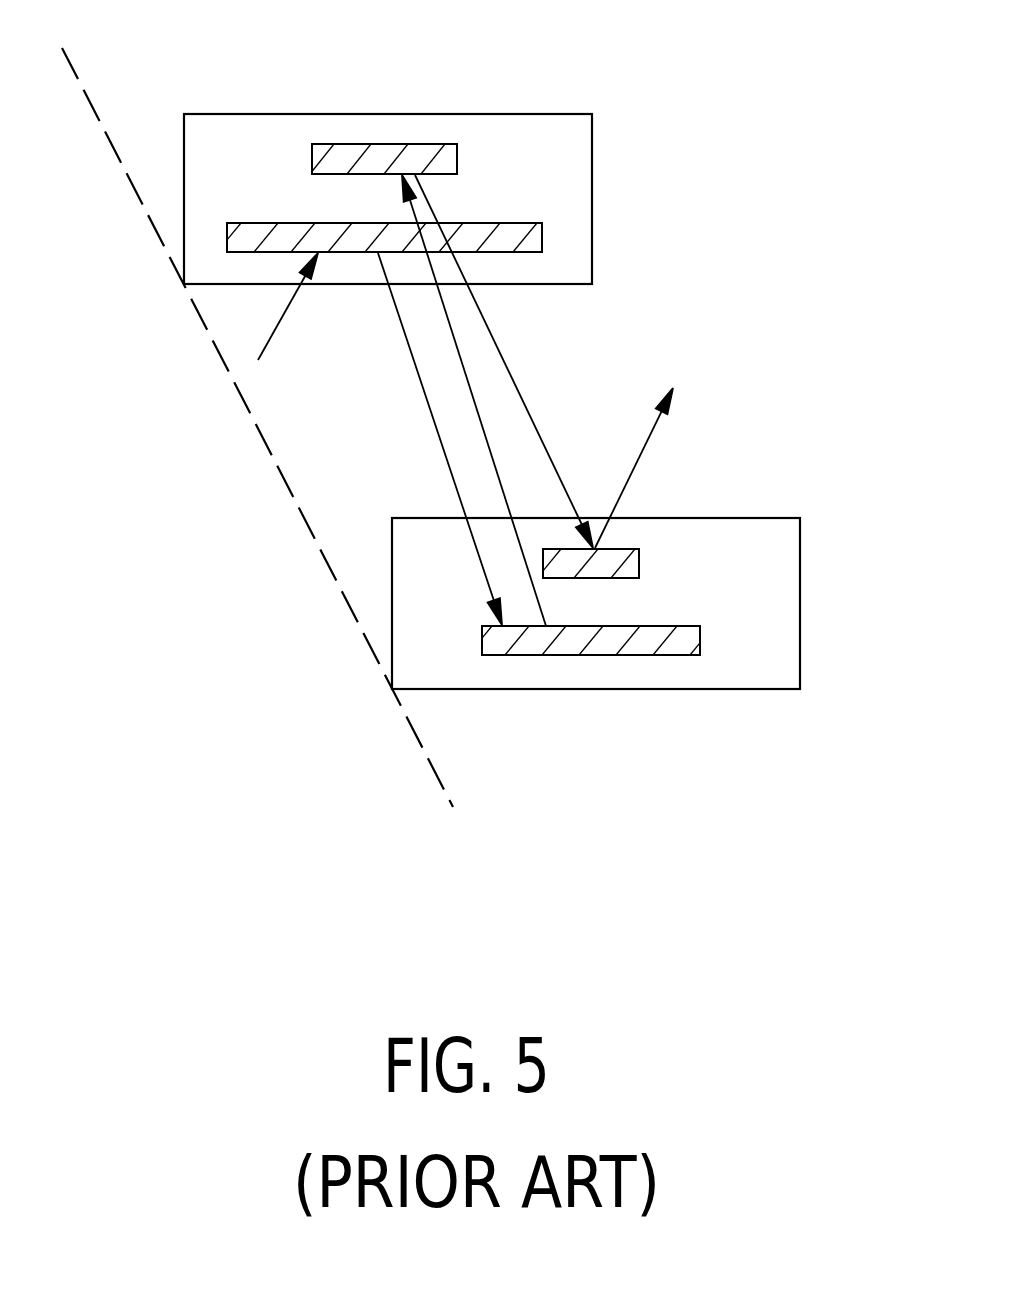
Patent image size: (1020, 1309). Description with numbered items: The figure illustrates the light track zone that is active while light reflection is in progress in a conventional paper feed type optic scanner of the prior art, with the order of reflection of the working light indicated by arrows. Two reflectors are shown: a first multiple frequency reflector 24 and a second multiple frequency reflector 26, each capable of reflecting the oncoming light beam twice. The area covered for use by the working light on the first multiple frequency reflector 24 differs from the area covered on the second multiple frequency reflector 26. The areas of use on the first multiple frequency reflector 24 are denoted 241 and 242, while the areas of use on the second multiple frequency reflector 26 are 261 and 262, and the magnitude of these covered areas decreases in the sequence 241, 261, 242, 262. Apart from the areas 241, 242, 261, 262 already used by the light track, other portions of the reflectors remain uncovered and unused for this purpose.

The first multiple frequency reflector 24 is at (298, 113).
The area of use of the first multiple frequency reflector 241 is at (542, 236).
The area of use of the first multiple frequency reflector 242 is at (457, 152).
The second multiple frequency reflector 26 is at (597, 690).
The area of use of the second multiple frequency reflector 261 is at (700, 640).
The area of use of the second multiple frequency reflector 262 is at (639, 562).